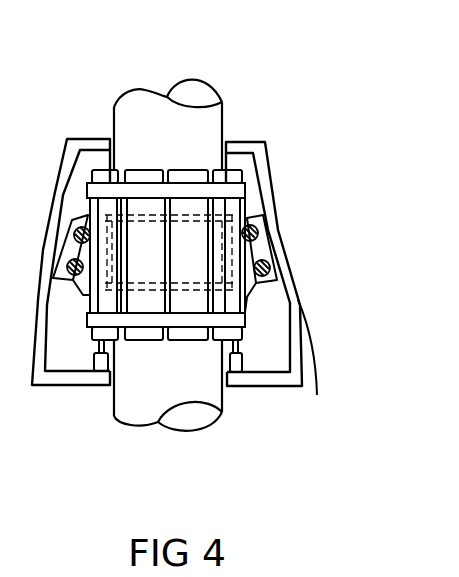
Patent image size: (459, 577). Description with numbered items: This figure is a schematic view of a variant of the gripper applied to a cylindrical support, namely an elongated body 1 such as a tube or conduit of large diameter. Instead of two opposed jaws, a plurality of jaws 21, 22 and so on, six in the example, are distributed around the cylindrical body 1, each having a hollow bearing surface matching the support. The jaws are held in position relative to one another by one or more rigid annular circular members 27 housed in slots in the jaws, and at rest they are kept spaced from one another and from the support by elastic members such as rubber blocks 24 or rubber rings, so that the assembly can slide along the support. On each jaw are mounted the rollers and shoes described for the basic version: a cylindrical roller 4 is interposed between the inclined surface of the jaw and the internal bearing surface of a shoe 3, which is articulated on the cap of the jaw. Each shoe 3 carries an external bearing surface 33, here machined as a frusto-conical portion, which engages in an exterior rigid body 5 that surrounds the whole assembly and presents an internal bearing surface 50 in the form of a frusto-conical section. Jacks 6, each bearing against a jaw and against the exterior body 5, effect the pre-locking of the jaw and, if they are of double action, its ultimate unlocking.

The elongated body 1 is at (180, 120).
The jaw 21 is at (102, 169).
The jaw 22 is at (142, 170).
The rigid annular circular member 27 is at (198, 193).
The cylindrical roller 4 is at (258, 225).
The shoe 3 is at (268, 237).
The external bearing surface 33 is at (277, 267).
The rubber block 24 is at (149, 218).
The jack 6 is at (237, 380).
The rigid body 5 is at (290, 340).
The bearing surface 50 is at (317, 395).